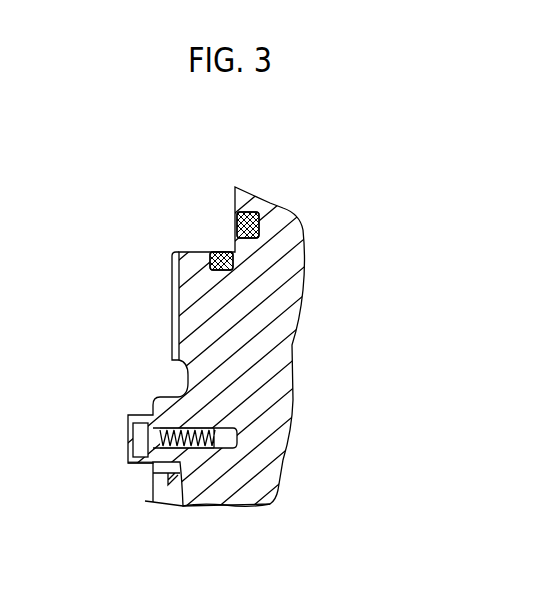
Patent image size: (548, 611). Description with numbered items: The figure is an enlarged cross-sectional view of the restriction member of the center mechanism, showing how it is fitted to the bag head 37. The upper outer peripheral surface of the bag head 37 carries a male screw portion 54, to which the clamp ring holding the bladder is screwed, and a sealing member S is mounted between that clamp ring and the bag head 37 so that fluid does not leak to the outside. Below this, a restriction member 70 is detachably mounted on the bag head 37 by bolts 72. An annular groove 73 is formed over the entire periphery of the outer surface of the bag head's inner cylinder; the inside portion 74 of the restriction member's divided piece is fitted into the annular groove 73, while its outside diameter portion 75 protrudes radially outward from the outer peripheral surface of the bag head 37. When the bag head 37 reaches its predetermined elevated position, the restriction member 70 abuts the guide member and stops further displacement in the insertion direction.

The bag head 37 is at (278, 222).
The sealing member S is at (227, 252).
The male screw portion 54 is at (172, 297).
The restriction member 70 is at (147, 413).
The bolt 72 is at (139, 442).
The annular groove 73 is at (181, 492).
The inside portion 74 is at (215, 428).
The outside diameter portion 75 is at (151, 465).